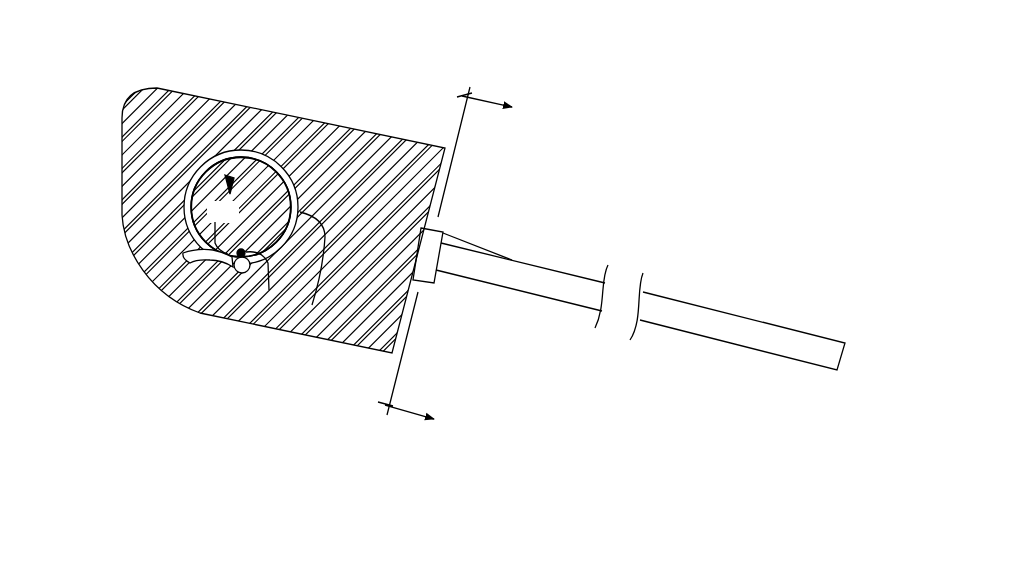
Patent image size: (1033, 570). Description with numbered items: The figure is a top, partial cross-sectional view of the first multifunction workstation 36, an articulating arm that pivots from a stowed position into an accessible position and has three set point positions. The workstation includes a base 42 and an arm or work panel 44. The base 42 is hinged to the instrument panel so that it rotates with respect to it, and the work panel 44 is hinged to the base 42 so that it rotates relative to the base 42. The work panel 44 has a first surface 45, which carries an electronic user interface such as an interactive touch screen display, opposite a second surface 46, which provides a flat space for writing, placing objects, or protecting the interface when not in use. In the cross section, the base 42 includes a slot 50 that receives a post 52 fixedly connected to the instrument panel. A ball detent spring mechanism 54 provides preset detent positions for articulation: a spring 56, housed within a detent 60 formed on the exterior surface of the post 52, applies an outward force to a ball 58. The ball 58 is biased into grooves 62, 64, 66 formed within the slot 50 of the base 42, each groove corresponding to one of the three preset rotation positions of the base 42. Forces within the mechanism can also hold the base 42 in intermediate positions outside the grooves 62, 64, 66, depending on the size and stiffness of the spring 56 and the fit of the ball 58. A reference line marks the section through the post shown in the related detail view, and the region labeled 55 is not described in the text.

The first multifunction workstation 36 is at (160, 50).
The base 42 is at (118, 90).
The work panel 44 is at (748, 330).
The first surface 45 is at (527, 292).
The second surface 46 is at (543, 269).
The slot 50 is at (147, 279).
The post 52 is at (248, 203).
The ball detent spring mechanism 54 is at (227, 176).
The outer sleeve 55 is at (312, 118).
The spring 56 is at (223, 226).
The ball 58 is at (243, 274).
The detent 60 is at (262, 268).
The groove 62 is at (183, 220).
The groove 64 is at (234, 290).
The groove 66 is at (312, 305).